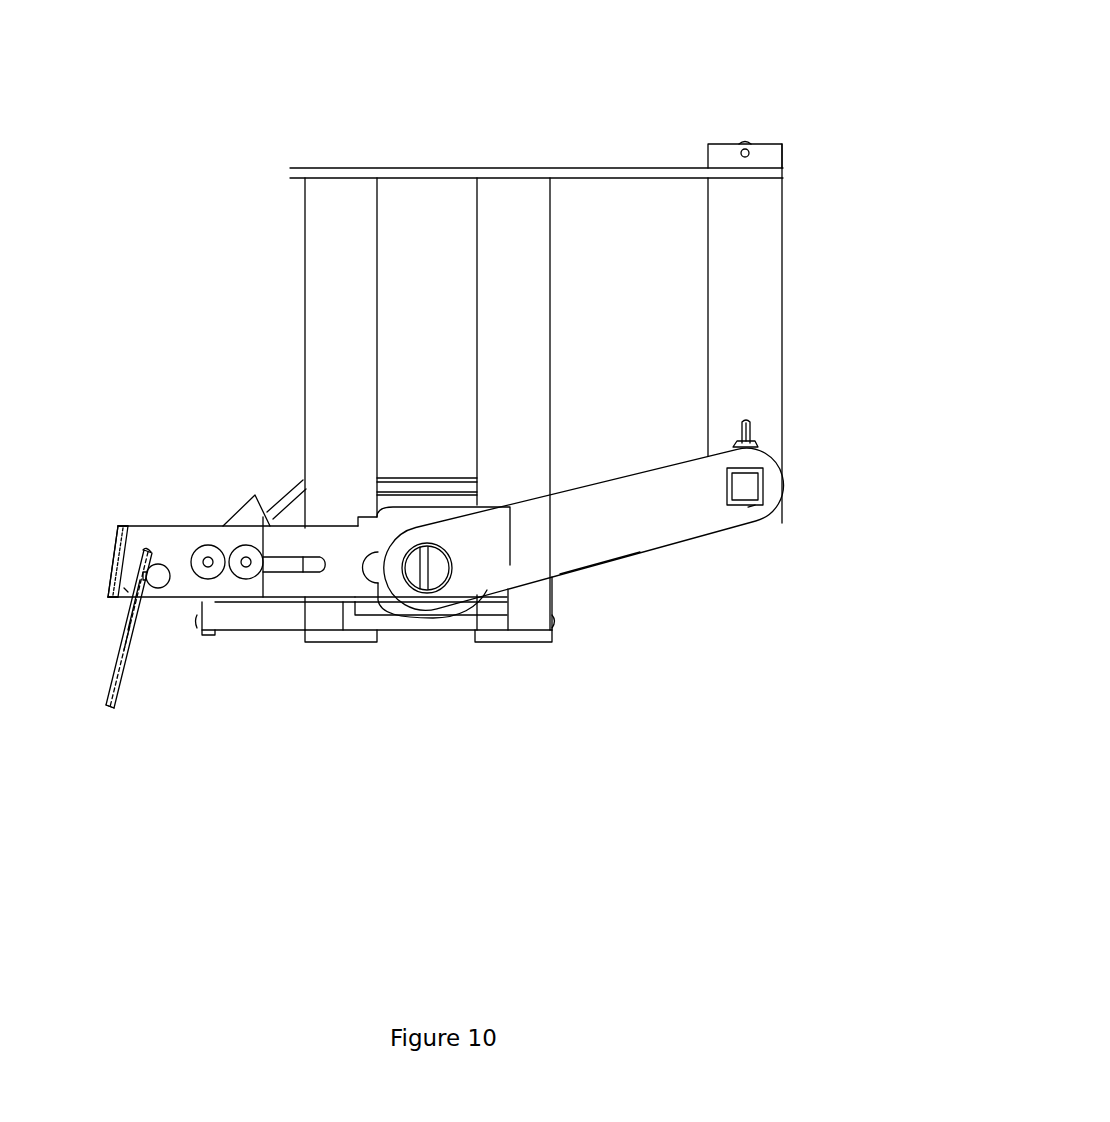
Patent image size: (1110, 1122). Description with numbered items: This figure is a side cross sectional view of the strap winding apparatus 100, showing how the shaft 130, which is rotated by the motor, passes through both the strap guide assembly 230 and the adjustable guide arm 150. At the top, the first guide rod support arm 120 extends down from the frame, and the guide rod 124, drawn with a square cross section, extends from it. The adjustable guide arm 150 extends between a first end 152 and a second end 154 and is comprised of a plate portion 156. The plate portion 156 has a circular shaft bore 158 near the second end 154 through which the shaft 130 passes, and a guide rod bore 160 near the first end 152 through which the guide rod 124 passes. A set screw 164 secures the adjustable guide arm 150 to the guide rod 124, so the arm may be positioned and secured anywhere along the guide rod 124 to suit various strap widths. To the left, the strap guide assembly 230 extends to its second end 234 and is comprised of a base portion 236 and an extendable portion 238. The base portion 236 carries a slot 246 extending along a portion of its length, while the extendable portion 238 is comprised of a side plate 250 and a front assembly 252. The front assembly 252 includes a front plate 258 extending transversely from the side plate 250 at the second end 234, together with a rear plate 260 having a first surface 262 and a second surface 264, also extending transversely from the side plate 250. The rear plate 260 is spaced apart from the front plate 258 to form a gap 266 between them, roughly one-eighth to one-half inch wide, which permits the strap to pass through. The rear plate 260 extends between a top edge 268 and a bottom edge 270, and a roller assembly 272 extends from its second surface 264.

The apparatus for winding a strap 100 is at (690, 76).
The first guide rod support arm 120 is at (781, 208).
The set screw 164 is at (749, 423).
The guide rod 124 is at (755, 485).
The first end of adjustable guide arm 152 is at (785, 487).
The guide rod bore 160 is at (748, 507).
The adjustable guide arm 150 is at (633, 548).
The plate portion 156 is at (585, 560).
The second end of adjustable guide arm 154 is at (385, 605).
The shaft 130 is at (413, 567).
The circular shaft bore 158 is at (450, 578).
The strap guide assembly 230 is at (101, 513).
The second end of strap guide assembly 234 is at (118, 525).
The extendable portion 238 is at (215, 537).
The base portion 236 is at (320, 543).
The side plate 250 is at (180, 537).
The slot 246 is at (288, 560).
The top edge of rear plate 268 is at (145, 550).
The front plate 258 is at (118, 557).
The front assembly 252 is at (112, 595).
The gap 266 is at (125, 588).
The first surface of rear plate 262 is at (115, 652).
The rear plate 260 is at (113, 675).
The second surface of rear plate 264 is at (125, 663).
The roller assembly 272 is at (163, 585).
The bottom edge of rear plate 270 is at (110, 711).